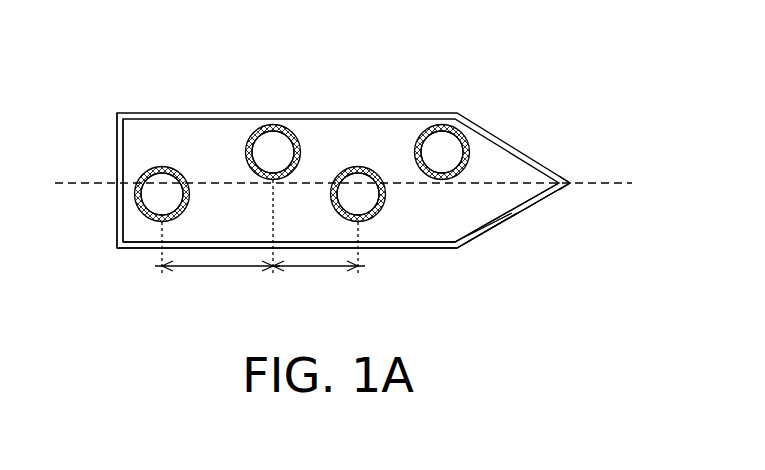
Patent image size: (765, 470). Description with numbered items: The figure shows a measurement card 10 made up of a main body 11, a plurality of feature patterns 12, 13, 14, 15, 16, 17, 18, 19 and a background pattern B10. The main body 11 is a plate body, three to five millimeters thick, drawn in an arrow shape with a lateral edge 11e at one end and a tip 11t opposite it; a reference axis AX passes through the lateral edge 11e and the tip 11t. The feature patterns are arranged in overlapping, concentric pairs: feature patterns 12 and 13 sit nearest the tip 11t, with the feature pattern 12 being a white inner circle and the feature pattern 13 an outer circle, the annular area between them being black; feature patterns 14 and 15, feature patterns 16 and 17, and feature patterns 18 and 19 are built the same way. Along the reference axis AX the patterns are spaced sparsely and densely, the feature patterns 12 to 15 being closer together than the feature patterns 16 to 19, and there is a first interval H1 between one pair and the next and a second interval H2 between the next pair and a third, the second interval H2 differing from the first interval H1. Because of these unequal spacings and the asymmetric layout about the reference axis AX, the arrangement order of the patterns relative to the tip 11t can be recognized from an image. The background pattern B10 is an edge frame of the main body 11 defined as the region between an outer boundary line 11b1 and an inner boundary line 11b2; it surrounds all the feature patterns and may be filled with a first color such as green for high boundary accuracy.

The measurement card 10 is at (122, 47).
The main body 11 is at (397, 137).
The lateral edge 11e is at (118, 147).
The tip 11t is at (572, 180).
The outer boundary line 11b1 is at (540, 204).
The inner boundary line 11b2 is at (492, 226).
The feature pattern 12 is at (458, 116).
The feature pattern 13 is at (468, 148).
The feature pattern 14 is at (343, 168).
The feature pattern 15 is at (373, 169).
The feature pattern 16 is at (257, 127).
The feature pattern 17 is at (288, 127).
The feature pattern 18 is at (158, 167).
The feature pattern 19 is at (180, 167).
The background pattern B10 is at (433, 245).
The reference axis AX is at (361, 180).
The first interval H1 is at (217, 238).
The second interval H2 is at (319, 258).